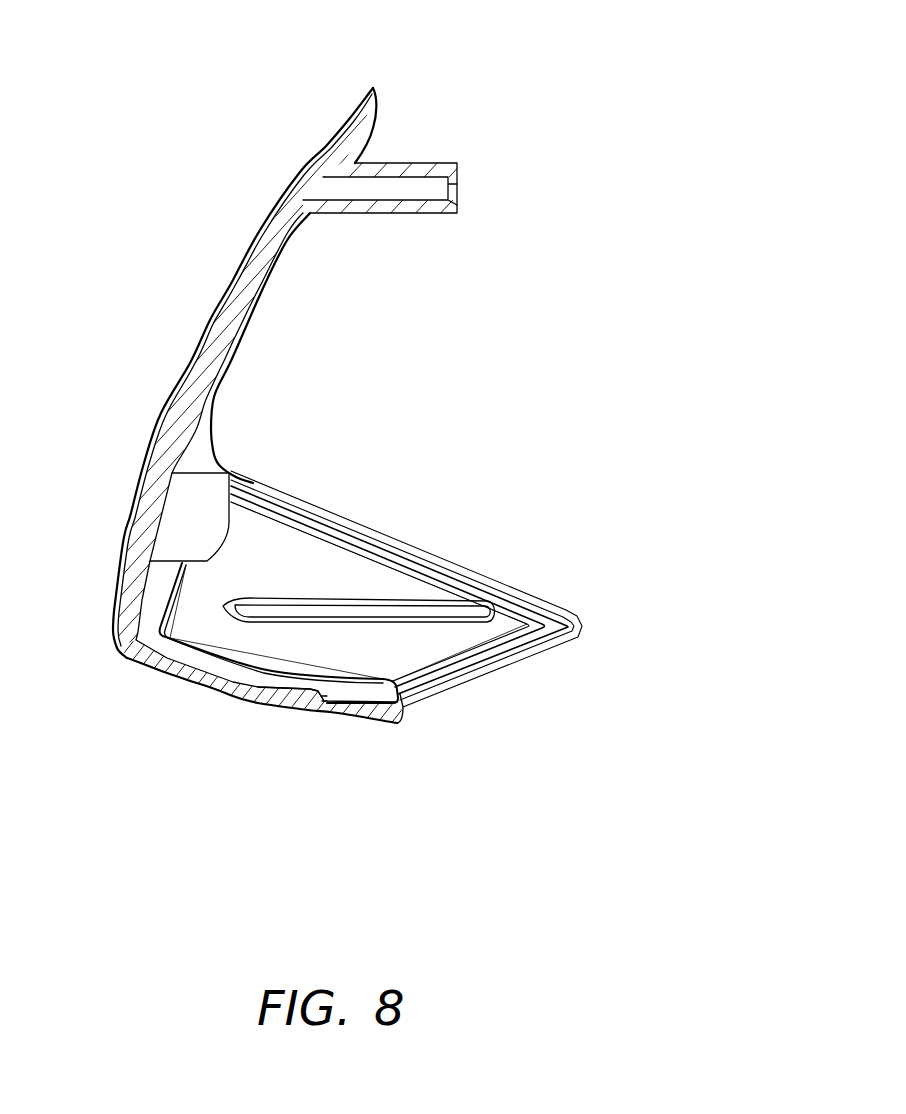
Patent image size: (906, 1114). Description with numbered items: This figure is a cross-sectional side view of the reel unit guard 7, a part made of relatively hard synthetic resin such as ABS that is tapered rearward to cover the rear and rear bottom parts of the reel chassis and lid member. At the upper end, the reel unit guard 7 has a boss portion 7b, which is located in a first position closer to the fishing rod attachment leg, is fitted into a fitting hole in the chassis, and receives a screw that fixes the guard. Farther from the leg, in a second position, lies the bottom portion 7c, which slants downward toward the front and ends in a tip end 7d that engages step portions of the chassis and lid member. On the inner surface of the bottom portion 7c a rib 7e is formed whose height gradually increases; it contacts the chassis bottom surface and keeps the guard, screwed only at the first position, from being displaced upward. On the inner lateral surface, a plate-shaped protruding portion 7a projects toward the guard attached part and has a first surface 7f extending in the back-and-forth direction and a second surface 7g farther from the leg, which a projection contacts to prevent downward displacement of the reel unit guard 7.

The reel unit guard 7 is at (168, 285).
The protruding portion 7a is at (335, 588).
The boss portion 7b is at (398, 163).
The bottom portion 7c is at (216, 658).
The tip end 7d is at (407, 722).
The rib 7e is at (328, 672).
The first surface 7f is at (433, 603).
The second surface 7g is at (417, 620).